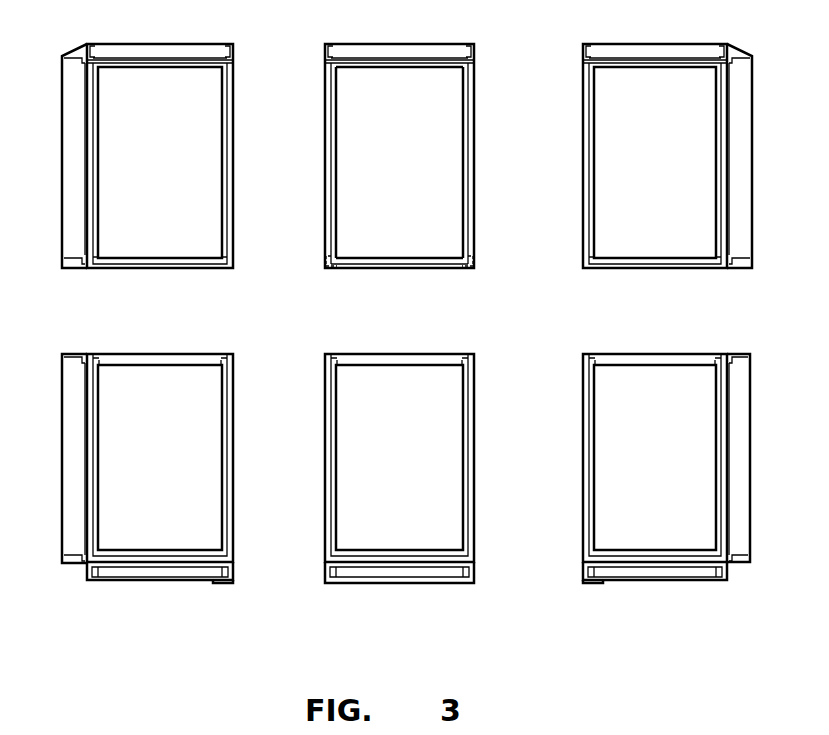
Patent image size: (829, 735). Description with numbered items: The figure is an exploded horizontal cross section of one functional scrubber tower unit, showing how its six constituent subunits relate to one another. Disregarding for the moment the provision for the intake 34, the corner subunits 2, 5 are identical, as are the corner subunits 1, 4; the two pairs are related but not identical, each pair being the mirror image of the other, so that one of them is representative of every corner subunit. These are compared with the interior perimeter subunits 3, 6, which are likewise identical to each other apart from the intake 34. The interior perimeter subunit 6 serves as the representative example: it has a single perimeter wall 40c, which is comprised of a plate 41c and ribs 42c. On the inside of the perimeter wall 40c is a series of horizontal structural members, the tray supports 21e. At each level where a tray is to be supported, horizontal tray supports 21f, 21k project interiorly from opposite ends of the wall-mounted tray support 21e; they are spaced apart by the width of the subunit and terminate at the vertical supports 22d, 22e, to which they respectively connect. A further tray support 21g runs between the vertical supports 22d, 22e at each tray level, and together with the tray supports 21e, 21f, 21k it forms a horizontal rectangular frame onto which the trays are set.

The corner subunit 1 is at (165, 172).
The corner subunit 2 is at (165, 475).
The interior perimeter subunit 3 is at (413, 474).
The corner subunit 4 is at (670, 475).
The corner subunit 5 is at (663, 173).
The interior perimeter subunit 6 is at (401, 152).
The tray support 21e is at (382, 68).
The tray support 21f is at (327, 118).
The tray support 21g is at (386, 258).
The tray support 21k is at (472, 151).
The vertical support 22d is at (321, 258).
The vertical support 22e is at (473, 248).
The intake 34 is at (216, 583).
The perimeter wall 40c is at (395, 45).
The plate 41c is at (437, 70).
The ribs 42c is at (357, 48).